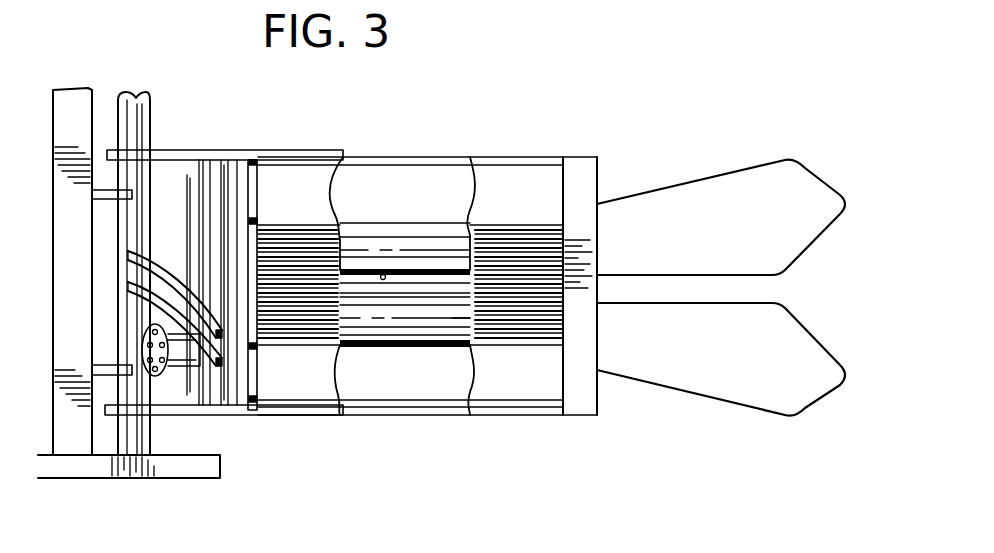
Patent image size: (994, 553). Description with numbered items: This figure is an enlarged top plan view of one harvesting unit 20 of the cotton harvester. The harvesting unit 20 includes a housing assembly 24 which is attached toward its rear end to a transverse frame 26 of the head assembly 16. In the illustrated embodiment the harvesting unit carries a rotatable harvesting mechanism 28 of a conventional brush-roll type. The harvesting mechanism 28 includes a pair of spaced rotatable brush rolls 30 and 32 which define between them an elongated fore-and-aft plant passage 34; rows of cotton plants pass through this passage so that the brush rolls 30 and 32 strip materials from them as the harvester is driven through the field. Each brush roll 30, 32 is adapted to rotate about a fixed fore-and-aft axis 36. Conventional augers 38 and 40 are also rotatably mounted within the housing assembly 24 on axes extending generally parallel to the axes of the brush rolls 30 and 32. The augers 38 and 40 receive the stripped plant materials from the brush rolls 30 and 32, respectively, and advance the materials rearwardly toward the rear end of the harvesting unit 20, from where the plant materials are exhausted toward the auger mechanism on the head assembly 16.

The head assembly 16 is at (283, 443).
The harvesting unit 20 is at (592, 111).
The housing assembly 24 is at (515, 418).
The transverse frame 26 is at (178, 481).
The harvesting mechanism 28 is at (408, 350).
The brush roll 30 is at (377, 323).
The brush roll 32 is at (360, 240).
The plant passage 34 is at (385, 273).
The fore-and-aft axis 36 is at (452, 246).
The auger 38 is at (442, 385).
The auger 40 is at (433, 190).